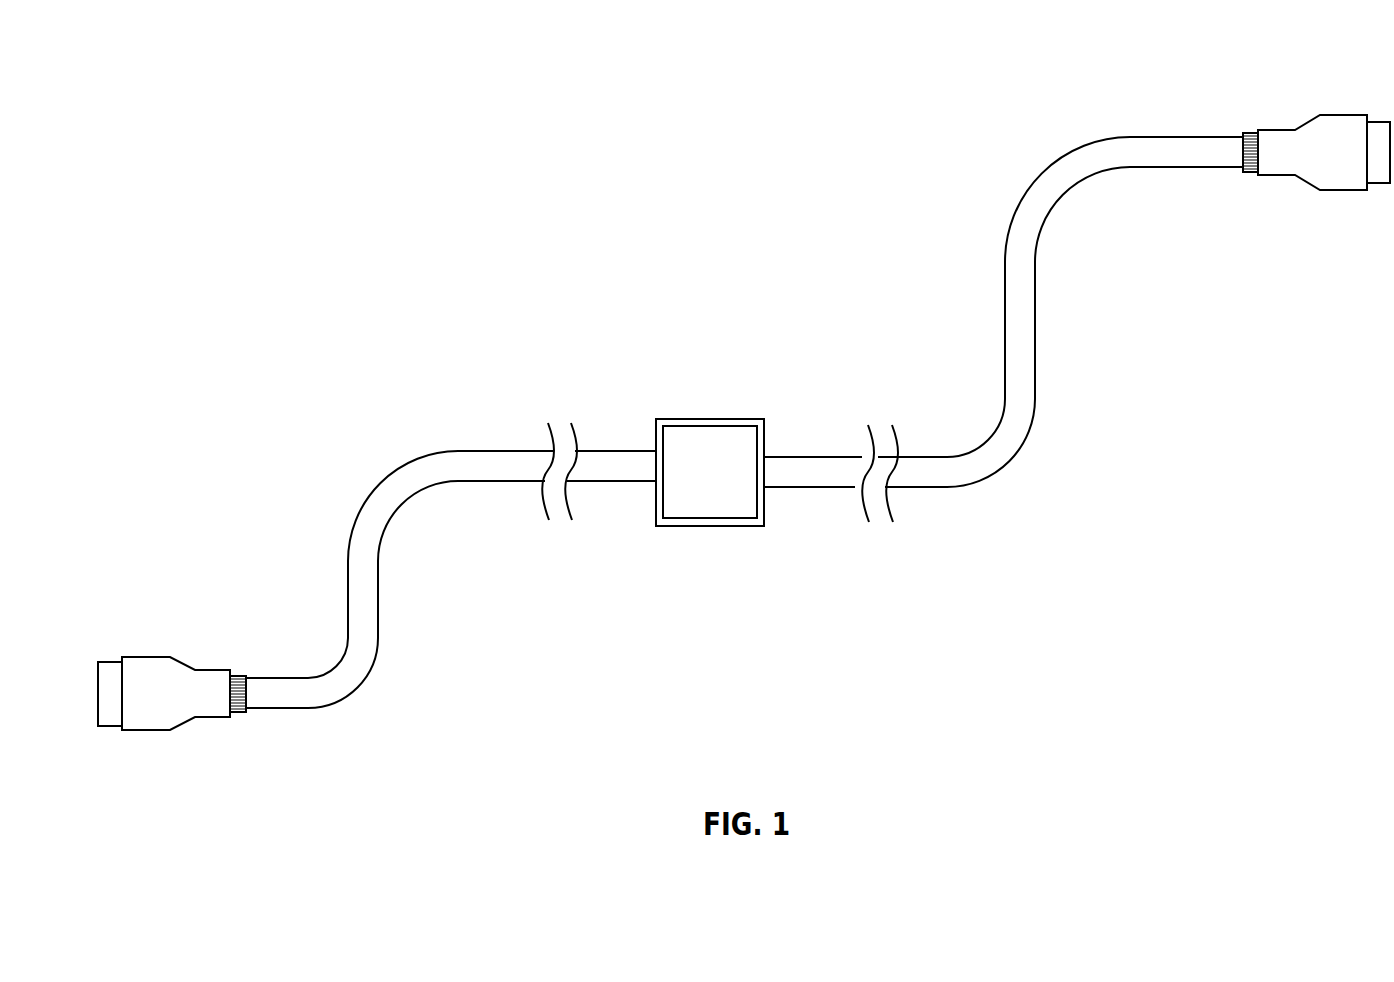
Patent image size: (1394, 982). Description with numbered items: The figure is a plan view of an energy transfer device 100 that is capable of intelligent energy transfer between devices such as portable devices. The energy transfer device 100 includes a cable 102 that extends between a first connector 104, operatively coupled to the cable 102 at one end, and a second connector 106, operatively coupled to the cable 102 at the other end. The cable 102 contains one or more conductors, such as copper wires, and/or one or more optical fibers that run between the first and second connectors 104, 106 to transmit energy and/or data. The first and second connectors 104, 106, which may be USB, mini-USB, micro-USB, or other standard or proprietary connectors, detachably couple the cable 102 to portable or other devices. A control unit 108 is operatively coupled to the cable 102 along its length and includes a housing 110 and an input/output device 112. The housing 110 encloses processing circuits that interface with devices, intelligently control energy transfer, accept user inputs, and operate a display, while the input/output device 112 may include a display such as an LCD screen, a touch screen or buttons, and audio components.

The energy transfer device 100 is at (276, 172).
The cable 102 is at (1023, 363).
The first connector 104 is at (148, 667).
The second connector 106 is at (1331, 128).
The control unit 108 is at (663, 372).
The housing 110 is at (738, 527).
The input/output device 112 is at (734, 426).